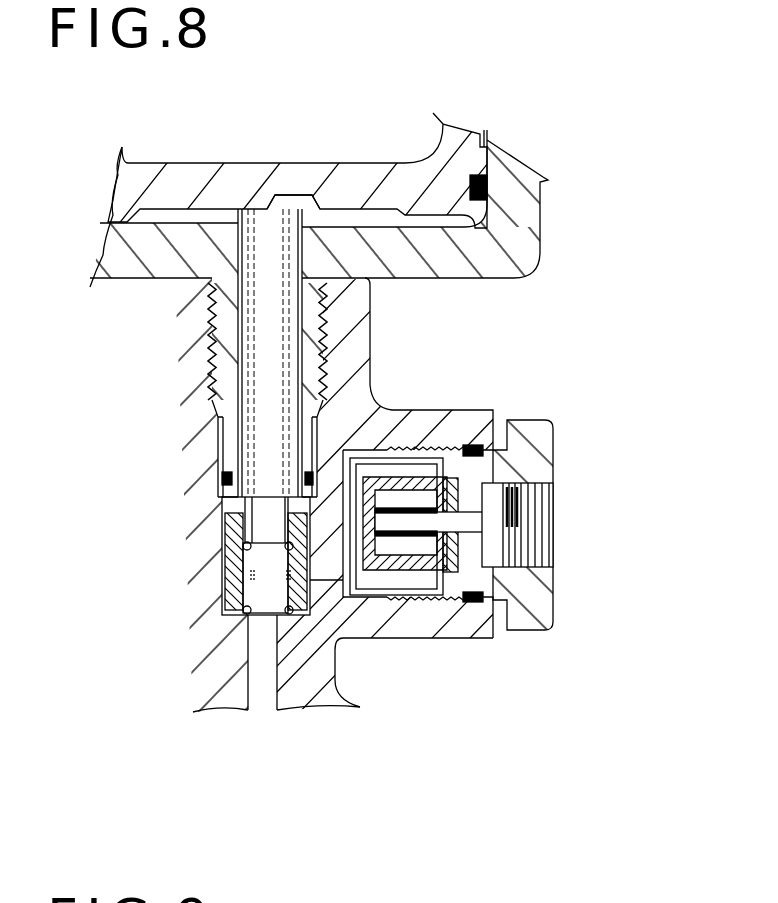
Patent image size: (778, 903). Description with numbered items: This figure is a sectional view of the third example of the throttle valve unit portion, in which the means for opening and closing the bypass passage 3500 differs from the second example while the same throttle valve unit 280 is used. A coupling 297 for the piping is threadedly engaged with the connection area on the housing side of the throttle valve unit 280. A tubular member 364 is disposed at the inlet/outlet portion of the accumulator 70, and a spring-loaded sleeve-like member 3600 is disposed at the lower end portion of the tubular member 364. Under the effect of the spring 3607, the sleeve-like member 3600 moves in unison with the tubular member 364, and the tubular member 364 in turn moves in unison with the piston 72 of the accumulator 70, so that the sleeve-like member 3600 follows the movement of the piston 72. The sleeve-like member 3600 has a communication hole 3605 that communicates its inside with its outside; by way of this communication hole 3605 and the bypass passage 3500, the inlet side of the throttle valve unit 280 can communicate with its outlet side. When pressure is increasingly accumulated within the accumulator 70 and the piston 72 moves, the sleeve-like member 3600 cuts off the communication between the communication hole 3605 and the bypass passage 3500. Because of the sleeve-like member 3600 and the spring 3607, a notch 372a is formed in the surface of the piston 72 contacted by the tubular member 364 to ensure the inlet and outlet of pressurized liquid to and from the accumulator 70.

The accumulator 70 is at (546, 198).
The piston 72 is at (358, 177).
The notch 372a is at (293, 196).
The tubular member 364 is at (213, 375).
The throttle valve unit 280 is at (408, 444).
The coupling 297 is at (533, 458).
The sleeve-like member 3600 is at (223, 547).
The spring 3607 is at (234, 582).
The communication hole 3605 is at (334, 578).
The bypass passage 3500 is at (362, 639).